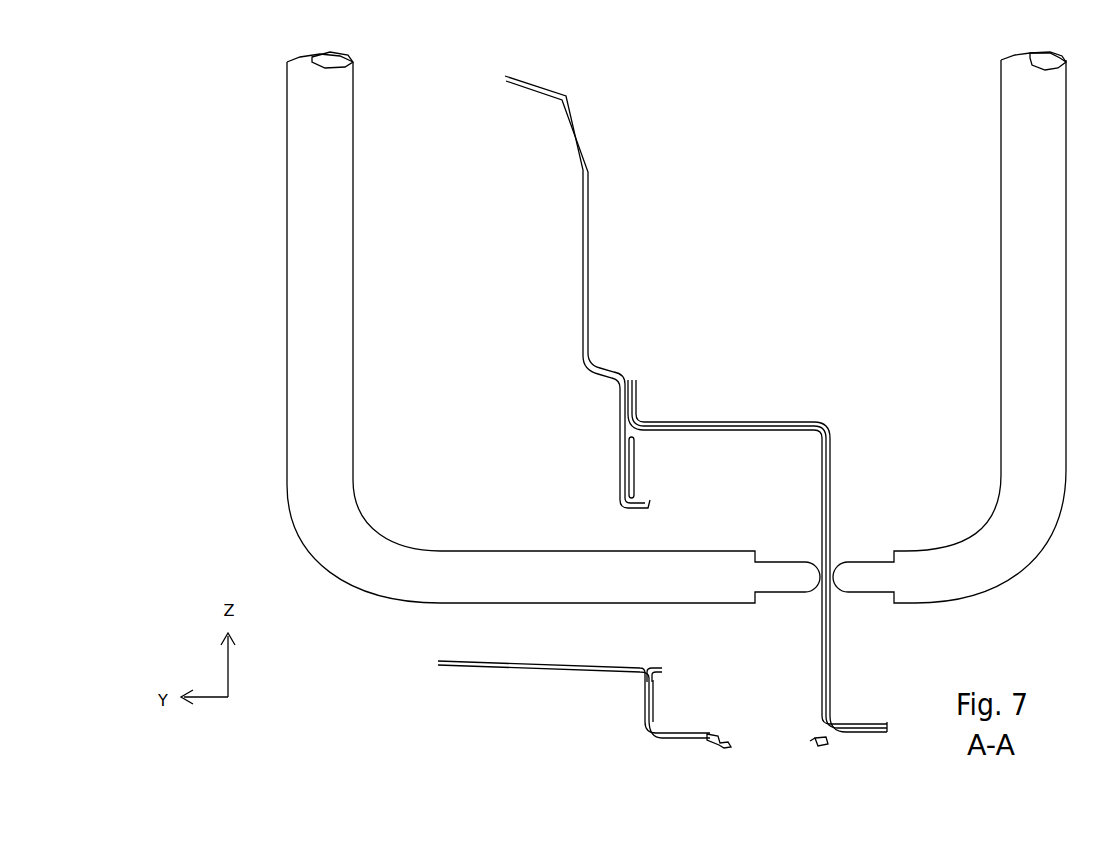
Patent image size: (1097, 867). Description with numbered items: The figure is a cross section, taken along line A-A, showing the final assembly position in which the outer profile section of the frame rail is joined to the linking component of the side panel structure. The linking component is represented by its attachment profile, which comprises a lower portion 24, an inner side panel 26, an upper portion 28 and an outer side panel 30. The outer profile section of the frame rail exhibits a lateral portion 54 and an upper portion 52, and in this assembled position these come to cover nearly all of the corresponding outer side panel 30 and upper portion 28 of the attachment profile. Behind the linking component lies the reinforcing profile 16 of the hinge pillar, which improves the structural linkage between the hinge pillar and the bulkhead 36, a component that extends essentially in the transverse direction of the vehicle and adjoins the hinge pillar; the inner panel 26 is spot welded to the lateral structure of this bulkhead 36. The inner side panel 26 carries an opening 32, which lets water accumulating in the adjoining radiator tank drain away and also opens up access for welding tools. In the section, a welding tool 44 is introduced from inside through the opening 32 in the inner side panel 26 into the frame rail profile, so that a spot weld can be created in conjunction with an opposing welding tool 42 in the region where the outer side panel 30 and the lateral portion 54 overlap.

The reinforcing profile 16 is at (590, 240).
The lower portion 24 is at (720, 748).
The inner side panel 26 is at (635, 448).
The upper portion 28 is at (767, 430).
The outer side panel 30 is at (822, 668).
The opening 32 is at (606, 527).
The bulkhead 36 is at (567, 670).
The welding tool 42 is at (1003, 272).
The welding tool 44 is at (287, 345).
The upper portion 52 is at (745, 422).
The lateral portion 54 is at (830, 635).